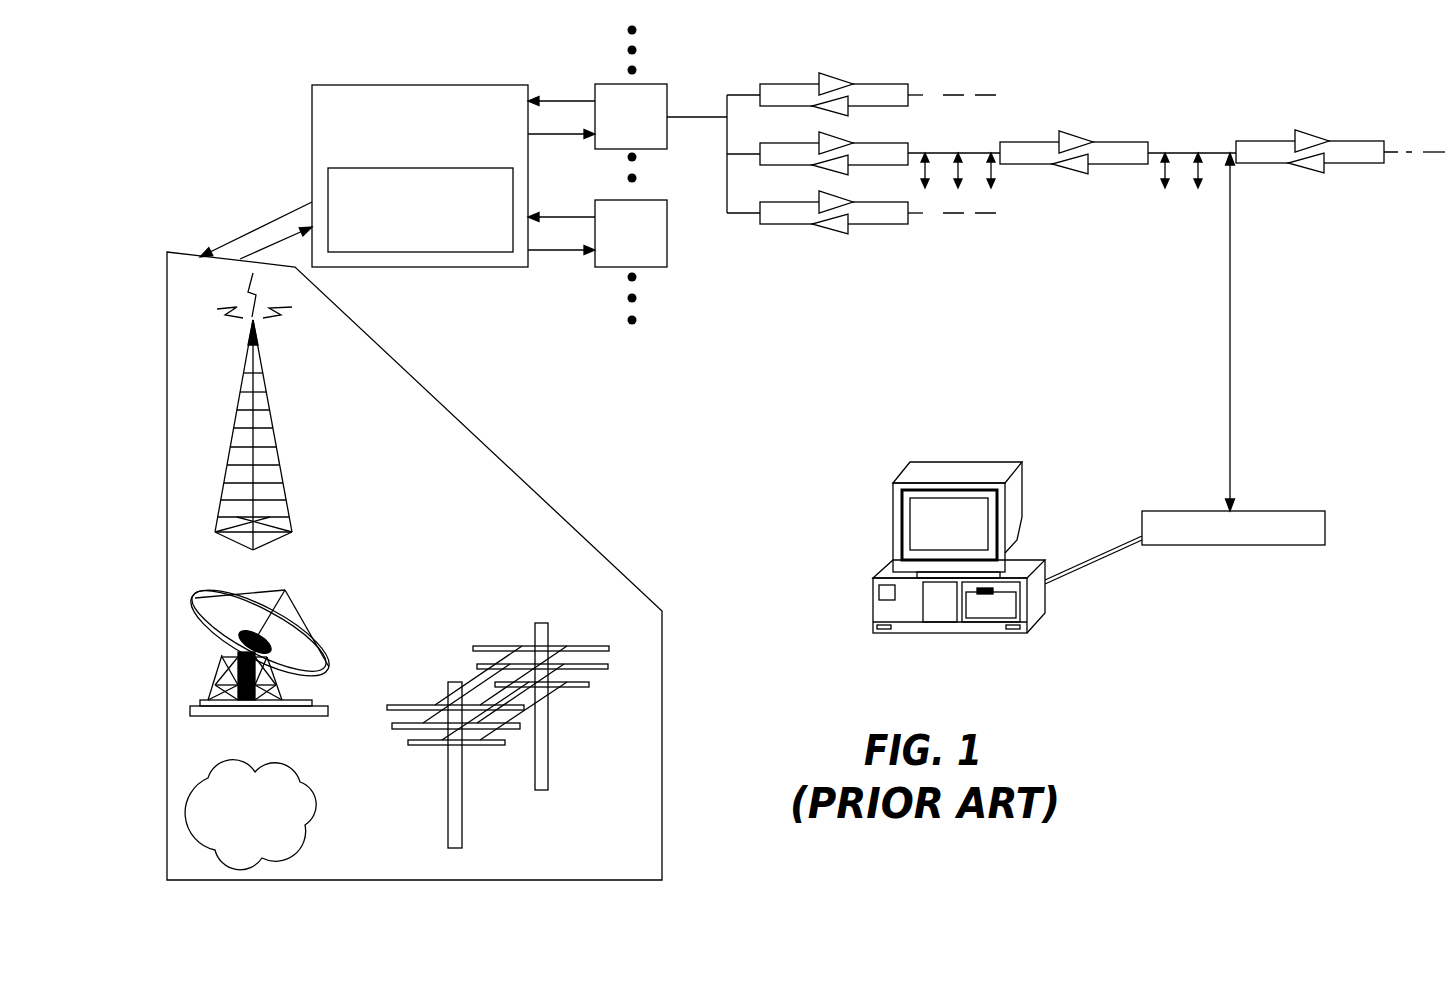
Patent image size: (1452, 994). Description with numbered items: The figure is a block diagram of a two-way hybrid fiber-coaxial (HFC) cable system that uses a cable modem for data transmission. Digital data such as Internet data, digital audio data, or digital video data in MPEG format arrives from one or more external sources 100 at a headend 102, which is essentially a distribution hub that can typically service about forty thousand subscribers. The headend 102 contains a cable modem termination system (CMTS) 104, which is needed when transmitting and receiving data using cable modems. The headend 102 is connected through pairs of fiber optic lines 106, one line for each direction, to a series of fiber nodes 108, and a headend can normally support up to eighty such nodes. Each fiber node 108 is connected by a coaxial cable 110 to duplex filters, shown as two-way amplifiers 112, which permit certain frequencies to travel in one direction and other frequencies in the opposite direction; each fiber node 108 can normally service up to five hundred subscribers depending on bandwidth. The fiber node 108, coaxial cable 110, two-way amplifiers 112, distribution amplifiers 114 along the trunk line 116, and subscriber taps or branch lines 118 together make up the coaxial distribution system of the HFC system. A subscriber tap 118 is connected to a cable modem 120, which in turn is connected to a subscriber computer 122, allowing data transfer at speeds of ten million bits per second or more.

The external sources 100 is at (175, 250).
The headend 102 is at (522, 84).
The cable modem termination system (CMTS) 104 is at (423, 253).
The fiber optic lines 106 is at (555, 218).
The fiber node 108 is at (667, 268).
The coaxial cable 110 is at (696, 116).
The two-way amplifiers (duplex filters) 112 is at (785, 224).
The distribution amplifiers 114 is at (1072, 175).
The trunk line 116 is at (1192, 150).
The subscriber tap (branch line) 118 is at (1231, 326).
The cable modem 120 is at (1290, 510).
The subscriber computer 122 is at (893, 497).